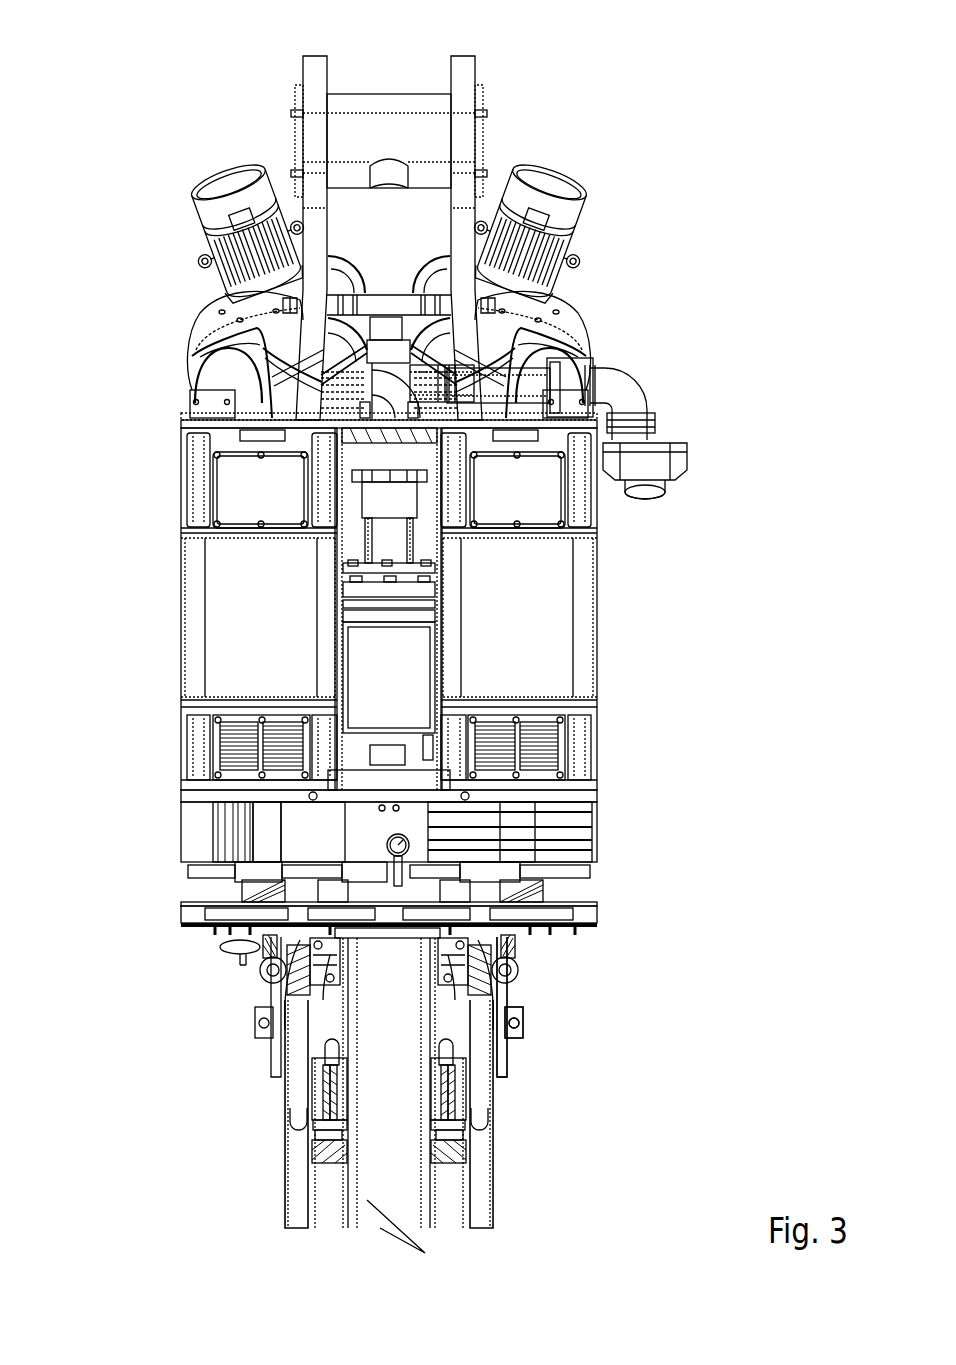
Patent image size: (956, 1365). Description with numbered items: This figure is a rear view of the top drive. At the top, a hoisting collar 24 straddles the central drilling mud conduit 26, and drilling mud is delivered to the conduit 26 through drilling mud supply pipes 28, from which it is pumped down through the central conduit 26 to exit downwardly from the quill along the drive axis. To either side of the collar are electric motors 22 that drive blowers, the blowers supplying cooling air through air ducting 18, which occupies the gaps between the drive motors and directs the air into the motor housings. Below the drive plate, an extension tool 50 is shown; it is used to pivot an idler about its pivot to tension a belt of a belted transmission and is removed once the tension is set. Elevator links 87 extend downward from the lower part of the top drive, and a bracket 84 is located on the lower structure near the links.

The air ducting 18 is at (197, 300).
The electric motor 22 is at (215, 170).
The hoisting collar 24 is at (393, 95).
The central drilling mud conduit 26 is at (388, 535).
The drilling mud supply pipe 28 is at (627, 360).
The extension tool 50 is at (232, 952).
The mounting bracket 84 is at (523, 1007).
The elevator links 87 is at (493, 1205).